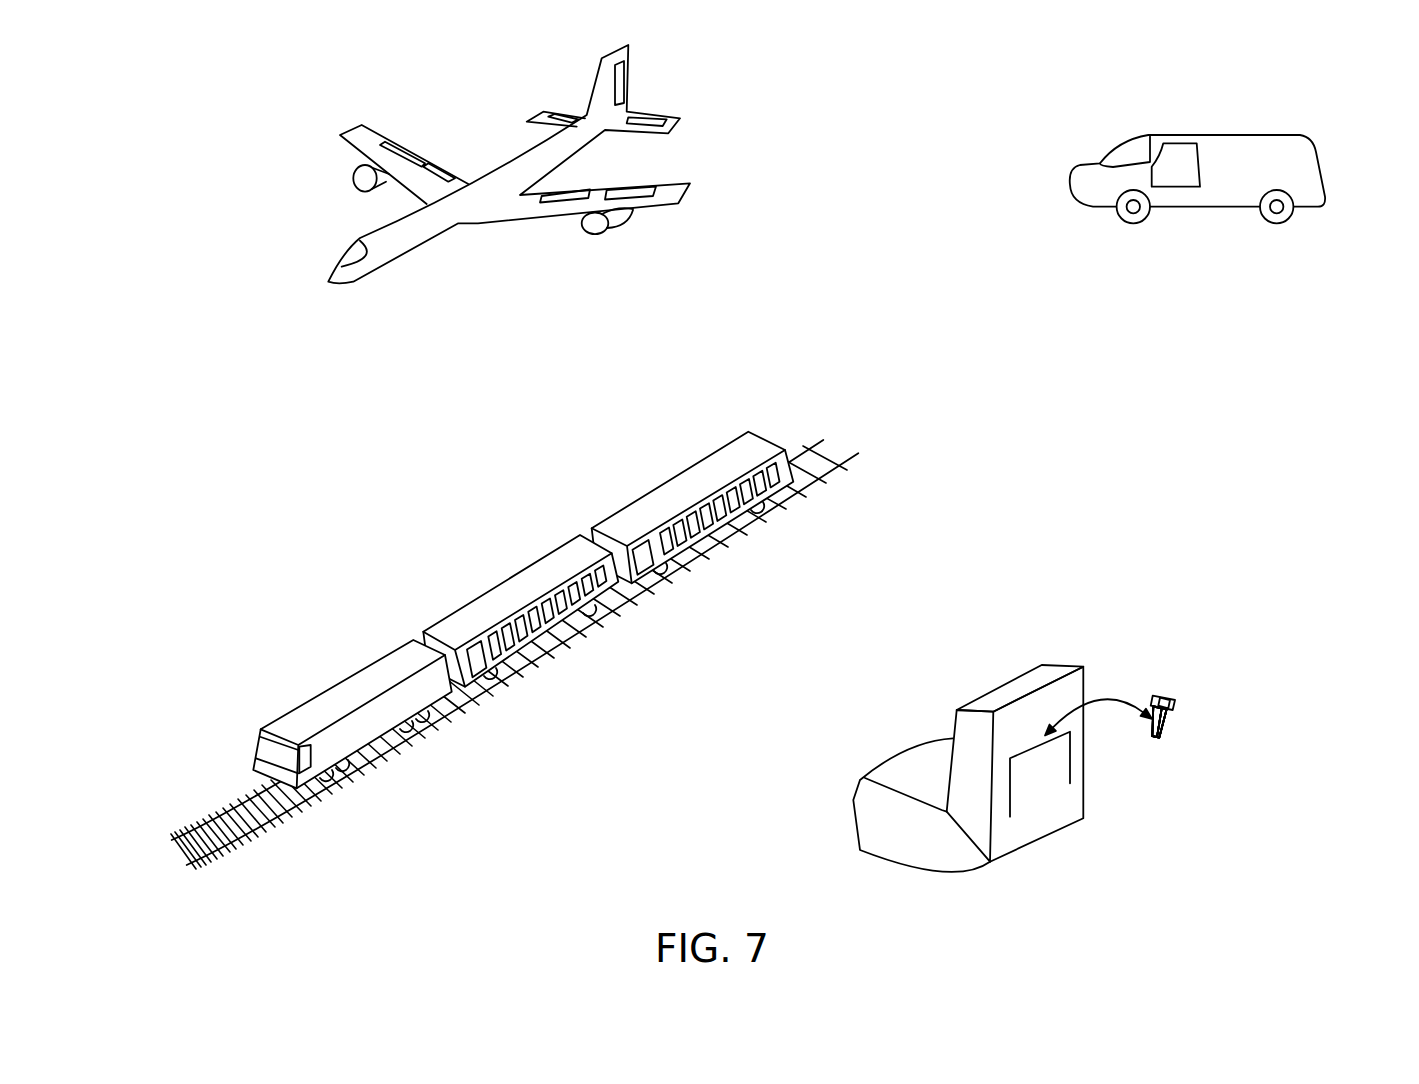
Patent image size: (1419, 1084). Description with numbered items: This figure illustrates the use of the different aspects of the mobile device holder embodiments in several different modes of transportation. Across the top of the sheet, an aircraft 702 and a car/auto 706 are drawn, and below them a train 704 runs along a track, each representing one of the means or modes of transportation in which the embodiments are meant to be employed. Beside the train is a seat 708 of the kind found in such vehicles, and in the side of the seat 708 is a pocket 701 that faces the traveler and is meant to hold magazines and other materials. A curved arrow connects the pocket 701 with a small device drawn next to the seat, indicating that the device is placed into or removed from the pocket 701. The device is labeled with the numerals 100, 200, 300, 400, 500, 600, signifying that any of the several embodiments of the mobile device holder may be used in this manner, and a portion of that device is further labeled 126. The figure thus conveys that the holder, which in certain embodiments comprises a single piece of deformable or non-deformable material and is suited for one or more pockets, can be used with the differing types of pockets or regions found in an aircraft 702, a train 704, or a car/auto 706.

The aircraft 702 is at (389, 221).
The train 704 is at (360, 702).
The car/auto 706 is at (1295, 93).
The seat 708 is at (998, 685).
The pocket 701 is at (1042, 758).
The connector 126 is at (1168, 695).
The device 100 is at (1165, 722).
The device 200 is at (1275, 743).
The device 300 is at (1275, 743).
The device 400 is at (1275, 743).
The device 500 is at (1275, 743).
The device 600 is at (1275, 743).